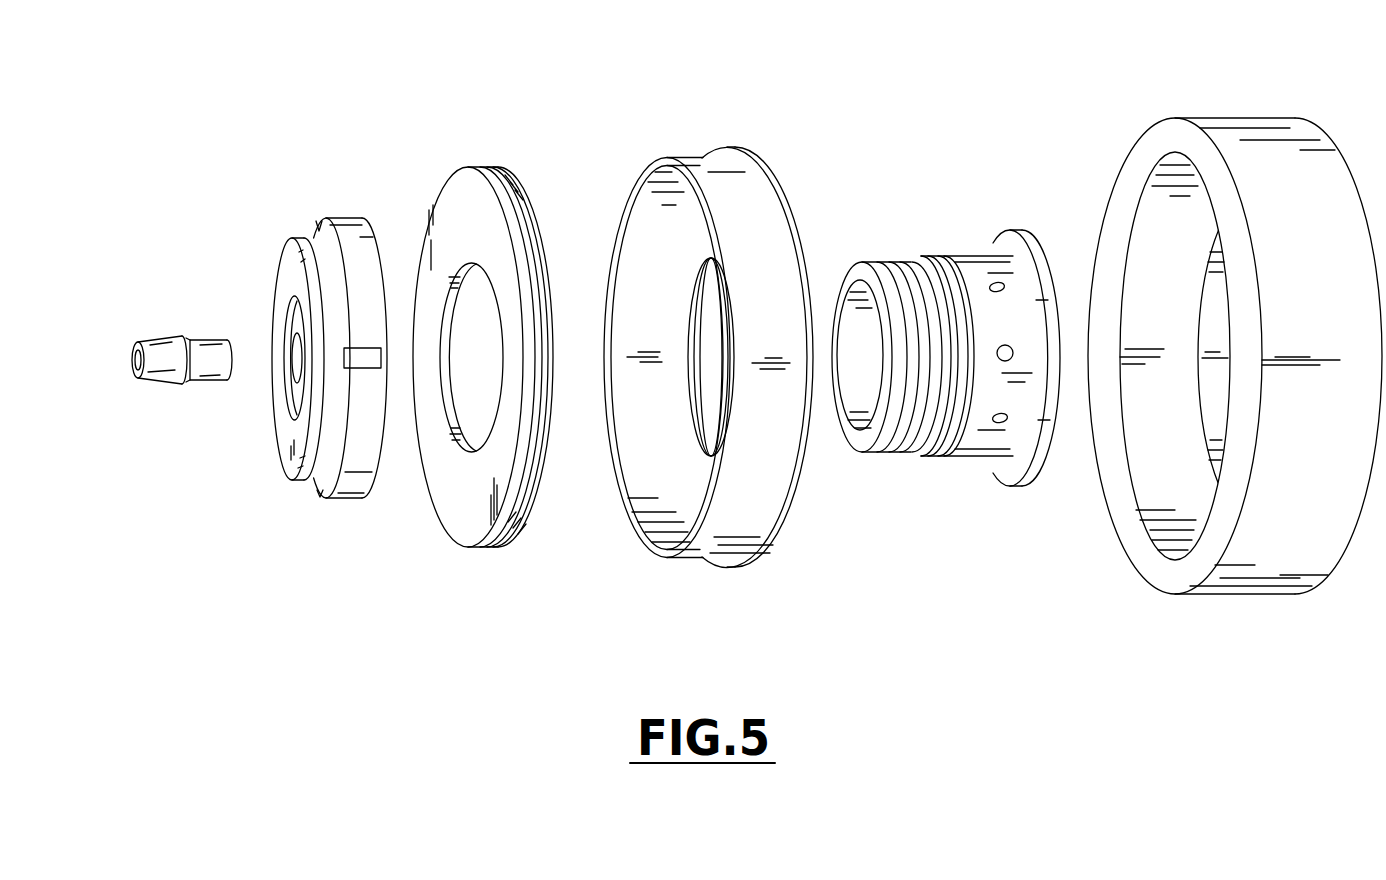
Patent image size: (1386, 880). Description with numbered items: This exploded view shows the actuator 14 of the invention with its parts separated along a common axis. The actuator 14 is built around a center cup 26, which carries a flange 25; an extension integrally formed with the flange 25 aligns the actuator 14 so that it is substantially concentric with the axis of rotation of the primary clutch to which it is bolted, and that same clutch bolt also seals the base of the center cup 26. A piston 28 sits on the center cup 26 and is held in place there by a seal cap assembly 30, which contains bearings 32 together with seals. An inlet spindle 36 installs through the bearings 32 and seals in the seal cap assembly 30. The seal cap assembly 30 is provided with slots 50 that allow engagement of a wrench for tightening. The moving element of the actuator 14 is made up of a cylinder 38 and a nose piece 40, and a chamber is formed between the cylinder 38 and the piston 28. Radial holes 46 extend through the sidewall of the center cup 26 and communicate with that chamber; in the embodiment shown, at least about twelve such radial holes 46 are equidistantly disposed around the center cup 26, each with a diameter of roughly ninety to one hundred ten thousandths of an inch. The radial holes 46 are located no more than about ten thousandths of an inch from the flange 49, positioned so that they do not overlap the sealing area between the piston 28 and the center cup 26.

The actuator 14 is at (240, 110).
The flange 25 is at (946, 332).
The center cup 26 is at (1010, 243).
The piston 28 is at (484, 505).
The seal cap assembly 30 is at (323, 240).
The bearings 32 is at (295, 322).
The inlet spindle 36 is at (158, 348).
The cylinder 38 is at (655, 165).
The nose piece 40 is at (1148, 142).
The radial holes 46 is at (993, 413).
The flange 49 is at (943, 256).
The slots 50 is at (319, 222).